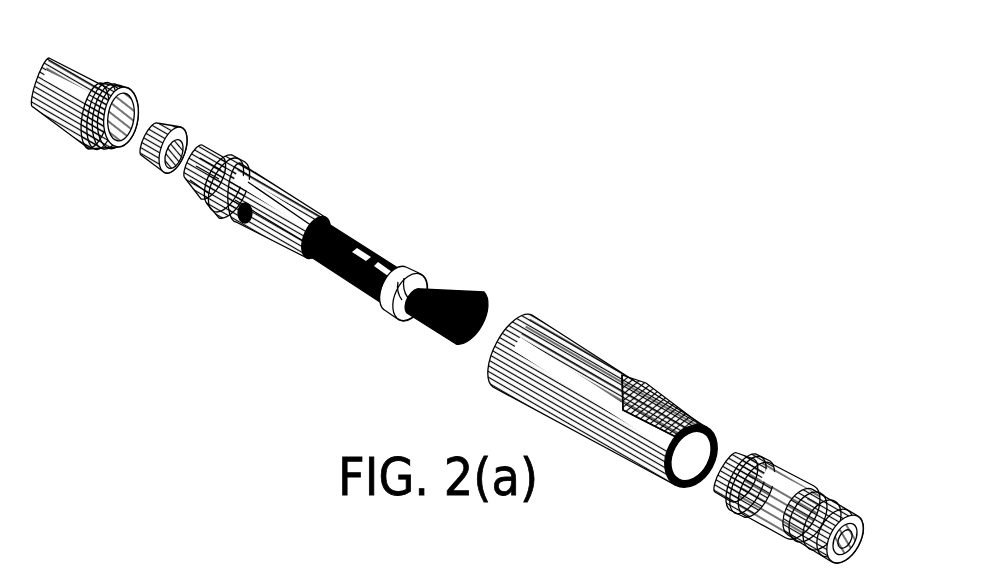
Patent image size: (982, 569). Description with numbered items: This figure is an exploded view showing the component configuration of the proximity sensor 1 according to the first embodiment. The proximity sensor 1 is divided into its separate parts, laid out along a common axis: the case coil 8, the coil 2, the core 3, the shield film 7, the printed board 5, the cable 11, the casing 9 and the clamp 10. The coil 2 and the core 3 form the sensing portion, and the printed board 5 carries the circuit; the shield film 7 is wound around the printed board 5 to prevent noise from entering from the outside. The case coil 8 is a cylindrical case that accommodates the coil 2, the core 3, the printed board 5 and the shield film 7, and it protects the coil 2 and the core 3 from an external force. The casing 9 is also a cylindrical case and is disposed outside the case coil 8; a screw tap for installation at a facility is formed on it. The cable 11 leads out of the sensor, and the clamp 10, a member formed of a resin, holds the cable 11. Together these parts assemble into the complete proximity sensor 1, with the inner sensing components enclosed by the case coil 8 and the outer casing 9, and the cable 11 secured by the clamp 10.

The proximity sensor 1 is at (591, 33).
The coil 2 is at (174, 127).
The core 3 is at (233, 154).
The printed board 5 is at (371, 243).
The shield film 7 is at (285, 190).
The case coil 8 is at (99, 72).
The casing 9 is at (608, 358).
The clamp 10 is at (801, 476).
The cable 11 is at (459, 297).